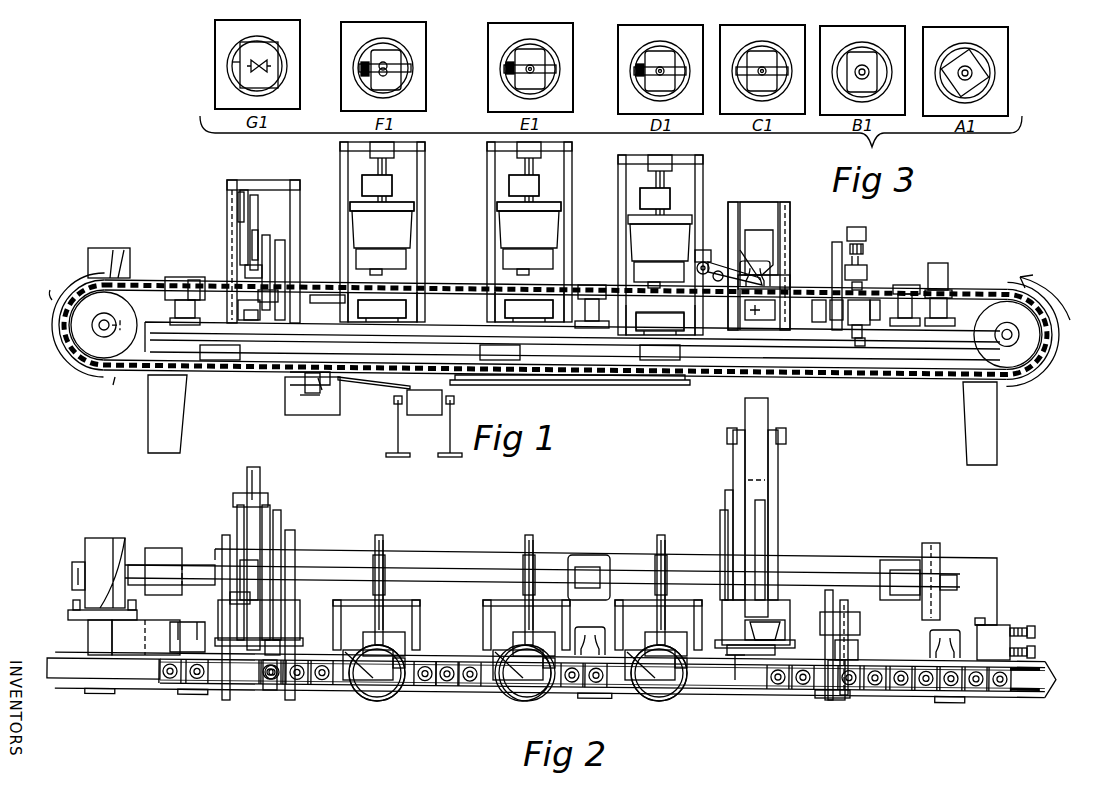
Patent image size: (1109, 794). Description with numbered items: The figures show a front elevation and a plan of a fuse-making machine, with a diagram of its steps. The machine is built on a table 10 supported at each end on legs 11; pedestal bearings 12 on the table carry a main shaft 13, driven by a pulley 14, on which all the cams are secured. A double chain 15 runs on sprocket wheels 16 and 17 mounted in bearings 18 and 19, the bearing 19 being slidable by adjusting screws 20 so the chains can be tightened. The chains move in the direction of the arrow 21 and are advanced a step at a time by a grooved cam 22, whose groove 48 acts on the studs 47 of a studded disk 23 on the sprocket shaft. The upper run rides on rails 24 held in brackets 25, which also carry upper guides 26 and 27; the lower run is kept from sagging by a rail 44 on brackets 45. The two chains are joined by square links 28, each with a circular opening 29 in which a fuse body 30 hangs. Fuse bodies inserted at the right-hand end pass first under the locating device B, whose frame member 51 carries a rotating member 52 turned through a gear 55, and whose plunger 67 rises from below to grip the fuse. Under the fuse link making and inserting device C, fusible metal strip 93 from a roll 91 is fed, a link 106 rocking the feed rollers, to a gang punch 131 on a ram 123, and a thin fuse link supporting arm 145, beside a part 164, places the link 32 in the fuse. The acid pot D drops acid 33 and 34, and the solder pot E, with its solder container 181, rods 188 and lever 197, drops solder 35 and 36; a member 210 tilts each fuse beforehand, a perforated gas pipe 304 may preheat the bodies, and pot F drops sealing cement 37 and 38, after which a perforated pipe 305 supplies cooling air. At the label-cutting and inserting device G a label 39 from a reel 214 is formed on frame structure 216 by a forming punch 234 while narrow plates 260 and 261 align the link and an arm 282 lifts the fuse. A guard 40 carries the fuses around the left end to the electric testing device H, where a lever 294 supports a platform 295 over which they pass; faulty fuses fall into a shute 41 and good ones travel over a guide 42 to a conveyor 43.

In FIG. 1, the table 10 is at (808, 348).
In FIG. 2, the table 10 is at (606, 576).
In FIG. 1, the legs 11 is at (572, 420).
In FIG. 1, the pedestal bearings 12 is at (180, 277).
In FIG. 2, the pedestal bearings 12 is at (165, 565).
In FIG. 2, the main shaft 13 is at (448, 568).
In FIG. 1, the pulley 14 is at (938, 264).
In FIG. 2, the pulley 14 is at (940, 560).
In FIG. 1, the double chain 15 is at (972, 292).
In FIG. 2, the double chain 15 is at (561, 620).
In FIG. 1, the sprocket wheels 16 is at (94, 350).
In FIG. 1, the sprocket wheels 17 is at (1032, 342).
In FIG. 1, the bearing 18 is at (112, 393).
In FIG. 2, the bearing 18 is at (90, 640).
In FIG. 2, the bearing 19 is at (1000, 640).
In FIG. 2, the adjusting screws 20 is at (1036, 650).
In FIG. 1, the arrow 21 is at (1054, 297).
In FIG. 1, the grooved cam 22 is at (88, 260).
In FIG. 2, the grooved cam 22 is at (85, 548).
In FIG. 2, the studded disk 23 is at (68, 616).
In FIG. 1, the rails 24 is at (818, 298).
In FIG. 1, the brackets 25 is at (194, 280).
In FIG. 2, the brackets 25 is at (190, 692).
In FIG. 2, the upper guide 26 is at (428, 684).
In FIG. 2, the upper guide 27 is at (472, 686).
In FIG. 3, the square links 28 is at (1020, 86).
In FIG. 2, the square links 28 is at (805, 686).
In FIG. 2, the circular opening 29 is at (1010, 690).
In FIG. 3, the fuse bodies 30 is at (280, 80).
In FIG. 2, the fuse bodies 30 is at (902, 686).
In FIG. 3, the fuse link 32 is at (259, 58).
In FIG. 2, the fuse link 32 is at (447, 684).
In FIG. 3, the acid 33 is at (648, 80).
In FIG. 3, the acid 34 is at (660, 66).
In FIG. 3, the solder 35 is at (518, 78).
In FIG. 3, the solder 36 is at (528, 60).
In FIG. 3, the sealing medium 37 is at (371, 82).
In FIG. 3, the sealing medium 38 is at (381, 62).
In FIG. 3, the label 39 is at (252, 78).
In FIG. 2, the label 39 is at (170, 684).
In FIG. 1, the guard 40 is at (60, 338).
In FIG. 2, the guard 40 is at (72, 680).
In FIG. 1, the shute 41 is at (314, 416).
In FIG. 1, the guide 42 is at (380, 386).
In FIG. 1, the conveyor 43 is at (424, 423).
In FIG. 1, the rail 44 is at (577, 380).
In FIG. 1, the brackets 45 is at (505, 362).
In FIG. 2, the studs 47 is at (76, 602).
In FIG. 1, the groove 48 is at (117, 255).
In FIG. 2, the groove 48 is at (112, 538).
In FIG. 2, the frame member 51 is at (832, 700).
In FIG. 1, the rotating member 52 is at (867, 268).
In FIG. 1, the gear 55 is at (866, 242).
In FIG. 1, the plunger 67 is at (860, 348).
In FIG. 2, the roll of fusible metal 91 is at (768, 414).
In FIG. 2, the strip of metal 93 is at (754, 550).
In FIG. 2, the link 106 is at (728, 540).
In FIG. 1, the ram 123 is at (759, 238).
In FIG. 2, the ram 123 is at (768, 650).
In FIG. 1, the gang punch 131 is at (716, 244).
In FIG. 1, the fuse link supporting arm 145 is at (745, 300).
In FIG. 2, the fuse link supporting arm 145 is at (745, 685).
In FIG. 1, the arm 164 is at (765, 270).
In FIG. 2, the arm 164 is at (725, 685).
In FIG. 1, the solder container 181 is at (416, 208).
In FIG. 1, the rods 188 is at (393, 186).
In FIG. 2, the lever 197 is at (386, 700).
In FIG. 1, the upwardly extending member 210 is at (505, 306).
In FIG. 2, the reel 214 is at (262, 483).
In FIG. 1, the frame structure 216 is at (237, 200).
In FIG. 1, the forming punch 234 is at (258, 252).
In FIG. 2, the narrow metal plate 260 is at (272, 690).
In FIG. 2, the narrow metal plate 261 is at (280, 680).
In FIG. 1, the arm 282 is at (248, 320).
In FIG. 1, the lever 294 is at (300, 398).
In FIG. 1, the elongated platform 295 is at (320, 380).
In FIG. 1, the perforated gas pipe 304 is at (565, 292).
In FIG. 1, the perforated pipe 305 is at (323, 285).
In FIG. 1, the locating device B is at (858, 256).
In FIG. 2, the locating device B is at (840, 688).
In FIG. 1, the fuse link making and inserting device C is at (770, 212).
In FIG. 2, the fuse link making and inserting device C is at (745, 680).
In FIG. 1, the acid pot D is at (683, 235).
In FIG. 2, the acid pot D is at (660, 696).
In FIG. 1, the solder pot E is at (555, 228).
In FIG. 2, the solder pot E is at (540, 692).
In FIG. 1, the pot F is at (410, 232).
In FIG. 2, the pot F is at (370, 690).
In FIG. 1, the label-cutting and inserting device G is at (298, 226).
In FIG. 2, the label-cutting and inserting device G is at (250, 690).
In FIG. 1, the electric testing device H is at (298, 385).